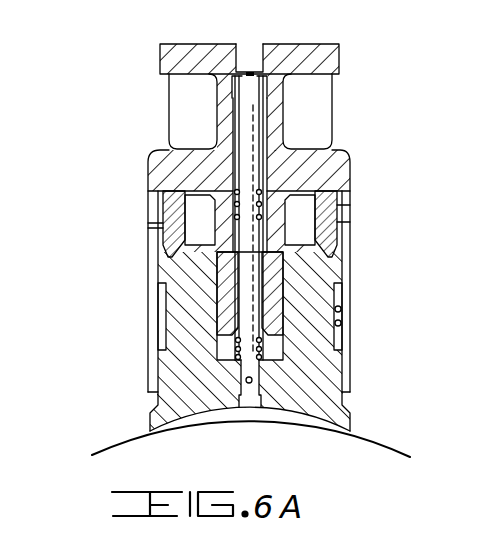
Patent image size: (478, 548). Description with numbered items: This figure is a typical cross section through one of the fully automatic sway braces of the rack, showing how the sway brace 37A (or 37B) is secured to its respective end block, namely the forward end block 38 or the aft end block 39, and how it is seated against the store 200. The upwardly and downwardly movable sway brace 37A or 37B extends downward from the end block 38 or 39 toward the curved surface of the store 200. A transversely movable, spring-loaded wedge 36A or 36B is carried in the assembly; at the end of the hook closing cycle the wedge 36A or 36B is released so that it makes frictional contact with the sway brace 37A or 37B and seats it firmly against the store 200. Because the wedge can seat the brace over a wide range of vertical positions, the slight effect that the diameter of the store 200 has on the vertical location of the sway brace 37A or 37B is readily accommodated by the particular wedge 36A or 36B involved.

The forward end block 38 is at (275, 204).
The aft end block 39 is at (283, 45).
The wedge 36A is at (261, 224).
The wedge 36B is at (172, 229).
The sway brace 37A is at (200, 311).
The sway brace 37B is at (178, 378).
The store 200 is at (373, 442).